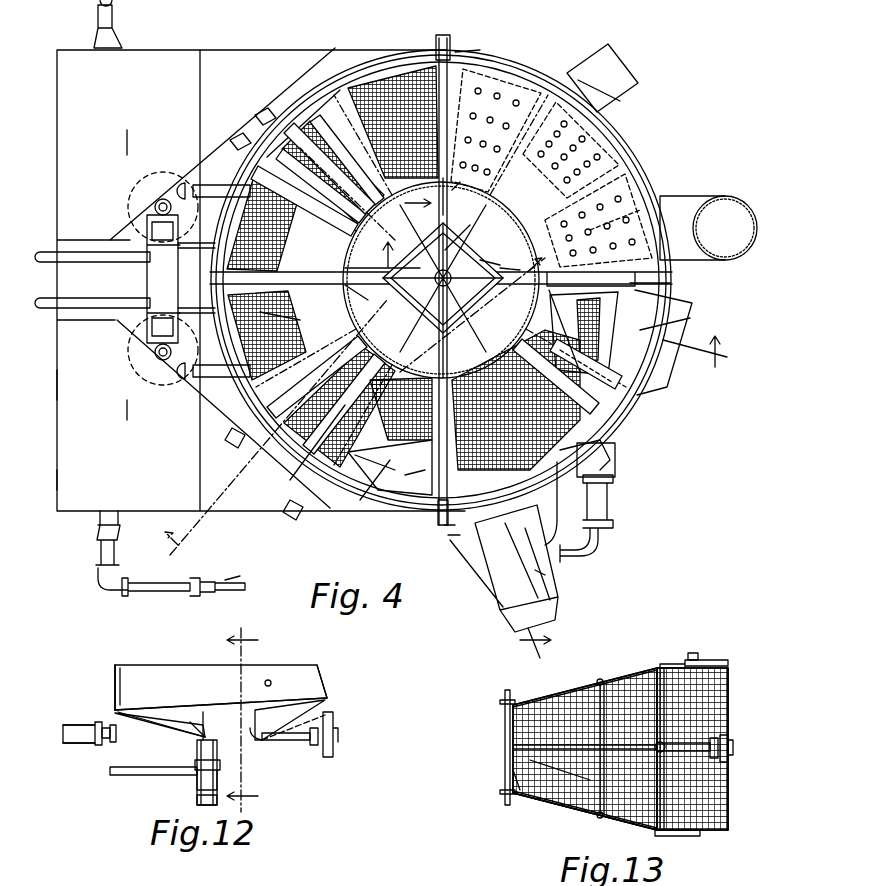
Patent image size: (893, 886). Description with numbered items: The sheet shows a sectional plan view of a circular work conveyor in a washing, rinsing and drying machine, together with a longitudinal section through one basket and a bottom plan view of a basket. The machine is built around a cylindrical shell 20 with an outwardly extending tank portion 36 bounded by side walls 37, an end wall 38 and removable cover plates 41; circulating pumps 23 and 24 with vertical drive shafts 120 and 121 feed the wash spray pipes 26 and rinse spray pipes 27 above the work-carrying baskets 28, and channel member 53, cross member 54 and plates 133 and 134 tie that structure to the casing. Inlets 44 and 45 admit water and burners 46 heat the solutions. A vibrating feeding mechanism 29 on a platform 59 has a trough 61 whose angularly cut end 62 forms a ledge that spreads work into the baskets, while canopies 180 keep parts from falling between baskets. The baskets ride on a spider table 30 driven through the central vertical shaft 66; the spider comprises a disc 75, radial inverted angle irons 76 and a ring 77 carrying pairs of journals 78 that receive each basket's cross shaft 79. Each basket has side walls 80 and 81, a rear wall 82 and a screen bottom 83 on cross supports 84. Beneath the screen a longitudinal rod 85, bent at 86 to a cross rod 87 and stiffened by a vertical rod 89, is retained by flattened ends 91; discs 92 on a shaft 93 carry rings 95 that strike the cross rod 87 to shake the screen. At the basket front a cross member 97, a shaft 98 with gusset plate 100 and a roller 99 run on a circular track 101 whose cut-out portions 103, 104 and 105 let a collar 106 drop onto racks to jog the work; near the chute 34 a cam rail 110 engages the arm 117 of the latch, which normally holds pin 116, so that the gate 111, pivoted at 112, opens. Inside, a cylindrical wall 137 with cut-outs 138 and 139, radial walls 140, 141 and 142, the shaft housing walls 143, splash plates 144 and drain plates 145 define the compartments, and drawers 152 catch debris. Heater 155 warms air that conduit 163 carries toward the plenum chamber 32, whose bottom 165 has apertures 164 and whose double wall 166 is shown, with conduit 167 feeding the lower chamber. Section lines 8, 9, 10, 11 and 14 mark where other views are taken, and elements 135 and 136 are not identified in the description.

In FIG. 4, the section line 8- 8 is at (478, 420).
In FIG. 4, the section line 9- 9 is at (355, 399).
In FIG. 4, the section line 10- 10 is at (542, 302).
In FIG. 4, the frame 11 is at (78, 480).
In FIG. 12, the section line 14- 14 is at (251, 715).
In FIG. 4, the cylindrical shell 20 is at (655, 445).
In FIG. 4, the circulating pump 23 is at (130, 355).
In FIG. 4, the circulating pump 24 is at (128, 207).
In FIG. 4, the spray pipes 26 is at (395, 345).
In FIG. 4, the spray pipes 27 is at (340, 172).
In FIG. 4, the work-carrying basket 28 is at (440, 45).
In FIG. 12, the work-carrying basket 28 is at (106, 679).
In FIG. 13, the work-carrying basket 28 is at (741, 781).
In FIG. 4, the vibrating feeding mechanism 29 is at (545, 573).
In FIG. 4, the spider table 30 is at (470, 228).
In FIG. 4, the plenum chamber 32 is at (145, 257).
In FIG. 4, the chute 34 is at (680, 322).
In FIG. 4, the tank portion 36 is at (73, 431).
In FIG. 4, the side walls 37 is at (182, 50).
In FIG. 4, the end wall 38 is at (57, 378).
In FIG. 4, the removable cover plates 41 is at (114, 113).
In FIG. 4, the inlet 44 is at (437, 534).
In FIG. 4, the inlet 45 is at (450, 45).
In FIG. 4, the adjustable burners 46 is at (112, 13).
In FIG. 4, the channel member 53 is at (145, 303).
In FIG. 4, the cross member 54 is at (163, 279).
In FIG. 4, the platform 59 is at (478, 575).
In FIG. 4, the trough 61 is at (545, 493).
In FIG. 13, the trough 61 is at (558, 698).
In FIG. 4, the angularly cut inner end 62 is at (490, 440).
In FIG. 4, the central vertical shaft 66 is at (443, 278).
In FIG. 4, the disc 75 is at (490, 252).
In FIG. 4, the inverted angle irons 76 is at (508, 260).
In FIG. 12, the inverted angle irons 76 is at (80, 725).
In FIG. 12, the ring 77 is at (75, 743).
In FIG. 12, the journals 78 is at (105, 740).
In FIG. 4, the cross shaft 79 is at (430, 150).
In FIG. 12, the cross shaft 79 is at (113, 742).
In FIG. 13, the cross shaft 79 is at (510, 785).
In FIG. 4, the side wall 80 is at (372, 464).
In FIG. 13, the side wall 80 is at (585, 810).
In FIG. 4, the side wall 81 is at (410, 485).
In FIG. 12, the side wall 81 is at (200, 672).
In FIG. 12, the rear wall 82 is at (122, 688).
In FIG. 13, the rear wall 82 is at (510, 765).
In FIG. 4, the screen bottom 83 is at (615, 440).
In FIG. 12, the screen bottom 83 is at (184, 705).
In FIG. 13, the screen bottom 83 is at (700, 708).
In FIG. 12, the cross supports 84 is at (320, 705).
In FIG. 13, the cross supports 84 is at (505, 740).
In FIG. 12, the longitudinal rod 85 is at (217, 725).
In FIG. 13, the longitudinal rod 85 is at (627, 750).
In FIG. 12, the bent portion 86 is at (178, 733).
In FIG. 13, the bent portion 86 is at (592, 763).
In FIG. 12, the cross rod 87 is at (210, 742).
In FIG. 13, the cross rod 87 is at (604, 785).
In FIG. 12, the vertical rod 89 is at (205, 730).
In FIG. 13, the flattened ends 91 is at (600, 680).
In FIG. 12, the discs 92 is at (200, 783).
In FIG. 12, the shaft 93 is at (140, 775).
In FIG. 12, the rings 95 is at (200, 800).
In FIG. 12, the cross member 97 is at (258, 740).
In FIG. 13, the cross member 97 is at (655, 707).
In FIG. 12, the shaft 98 is at (295, 740).
In FIG. 13, the shaft 98 is at (665, 745).
In FIG. 12, the wheel or roller 99 is at (335, 750).
In FIG. 13, the wheel or roller 99 is at (728, 728).
In FIG. 12, the gusset plate 100 is at (275, 735).
In FIG. 4, the circular track 101 is at (375, 505).
In FIG. 4, the cut-out portion 103 is at (290, 480).
In FIG. 4, the cut-out portion 104 is at (262, 115).
In FIG. 4, the cut-out portion 105 is at (455, 50).
In FIG. 12, the collar 106 is at (314, 745).
In FIG. 13, the collar 106 is at (720, 748).
In FIG. 4, the cam rail 110 is at (692, 300).
In FIG. 12, the gate 111 is at (322, 680).
In FIG. 13, the pivotal connection 112 is at (665, 836).
In FIG. 13, the pin 116 is at (695, 653).
In FIG. 13, the forwardly projecting arm 117 is at (730, 662).
In FIG. 4, the vertical drive shaft 120 is at (155, 352).
In FIG. 4, the vertical drive shaft 121 is at (162, 199).
In FIG. 4, the plate 133 is at (192, 296).
In FIG. 4, the plate 134 is at (195, 250).
In FIG. 4, the lower pipe 135 is at (205, 378).
In FIG. 4, the upper pipe 136 is at (205, 185).
In FIG. 4, the cylindrical vertical wall 137 is at (555, 318).
In FIG. 4, the cut-out portion 138 is at (364, 299).
In FIG. 4, the cut-out portion 139 is at (355, 228).
In FIG. 4, the radially extending wall 140 is at (425, 440).
In FIG. 4, the radially extending wall 141 is at (280, 290).
In FIG. 4, the radially extending wall 142 is at (450, 115).
In FIG. 4, the parallel vertical walls 143 is at (465, 190).
In FIG. 4, the splash plates 144 is at (315, 210).
In FIG. 4, the drain plates 145 is at (300, 318).
In FIG. 4, the sliding drawer 152 is at (245, 133).
In FIG. 4, the adjustable heater 155 is at (605, 497).
In FIG. 4, the conduit 163 is at (735, 258).
In FIG. 4, the apertures 164 is at (525, 93).
In FIG. 4, the bottom 165 is at (640, 140).
In FIG. 4, the double outer wall 166 is at (640, 165).
In FIG. 4, the conduit 167 is at (600, 70).
In FIG. 4, the canopies or deflectors 180 is at (537, 410).